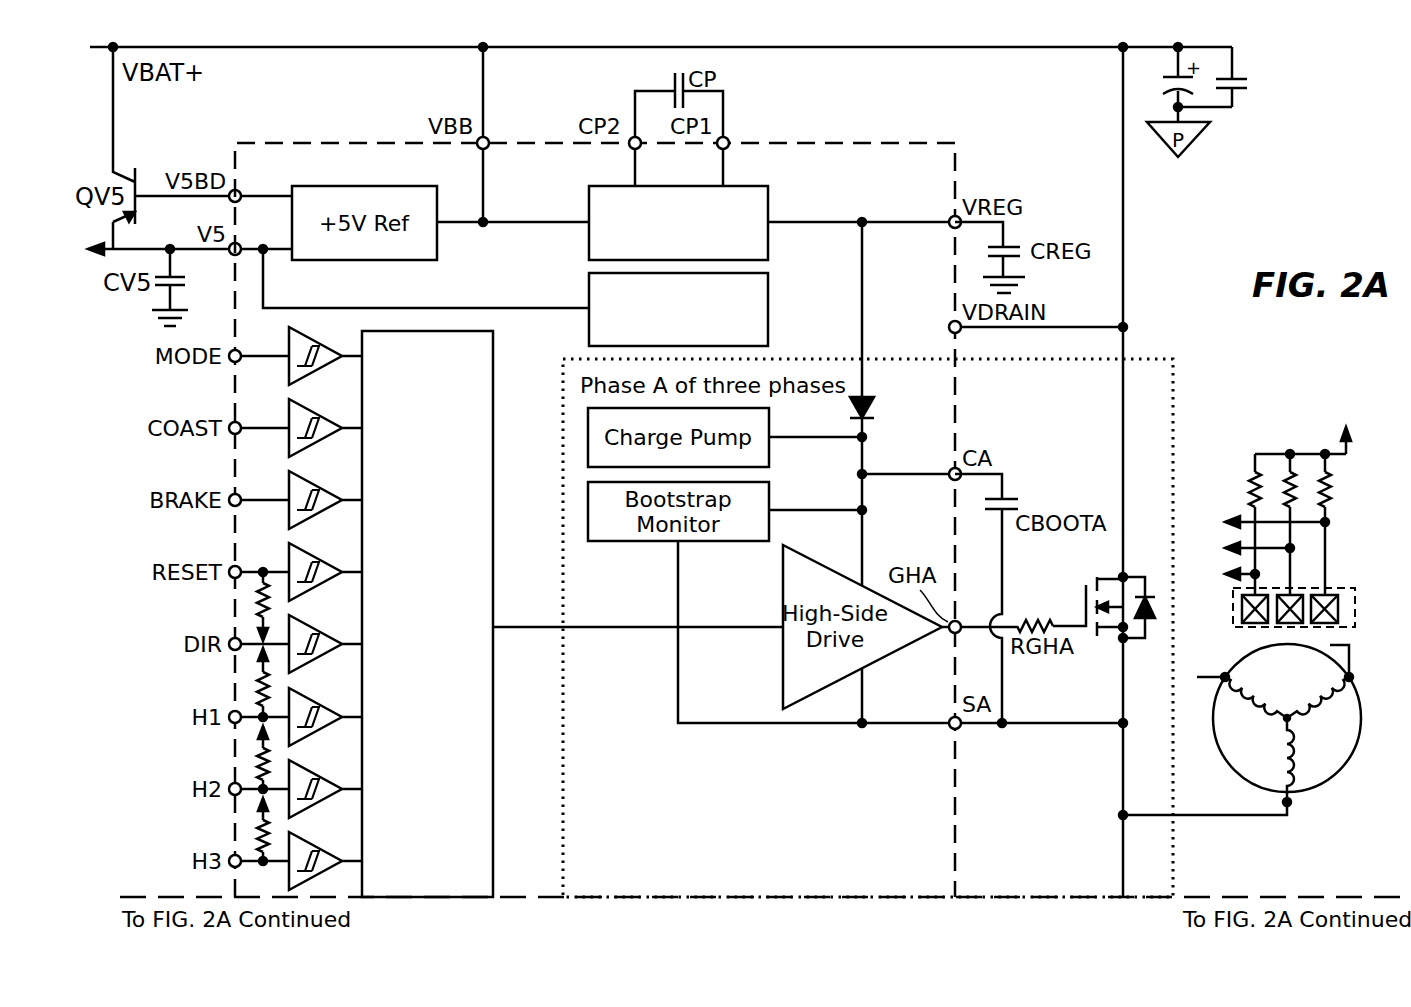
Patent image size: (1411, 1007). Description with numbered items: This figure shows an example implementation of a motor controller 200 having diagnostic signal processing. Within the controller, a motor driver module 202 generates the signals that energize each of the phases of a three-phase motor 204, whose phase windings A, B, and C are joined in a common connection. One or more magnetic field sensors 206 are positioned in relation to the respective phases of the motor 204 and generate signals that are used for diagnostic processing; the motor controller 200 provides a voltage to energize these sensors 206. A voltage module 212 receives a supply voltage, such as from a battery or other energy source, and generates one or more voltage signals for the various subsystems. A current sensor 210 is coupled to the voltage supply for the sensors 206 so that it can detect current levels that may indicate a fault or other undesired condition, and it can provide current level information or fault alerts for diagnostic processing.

The motor controller 200 is at (320, 143).
The motor driver module 202 is at (547, 832).
The three-phase motor 204 is at (1320, 781).
The magnetic field sensors 206 is at (1346, 588).
The current sensor 210 is at (658, 337).
The voltage module 212 is at (551, 193).